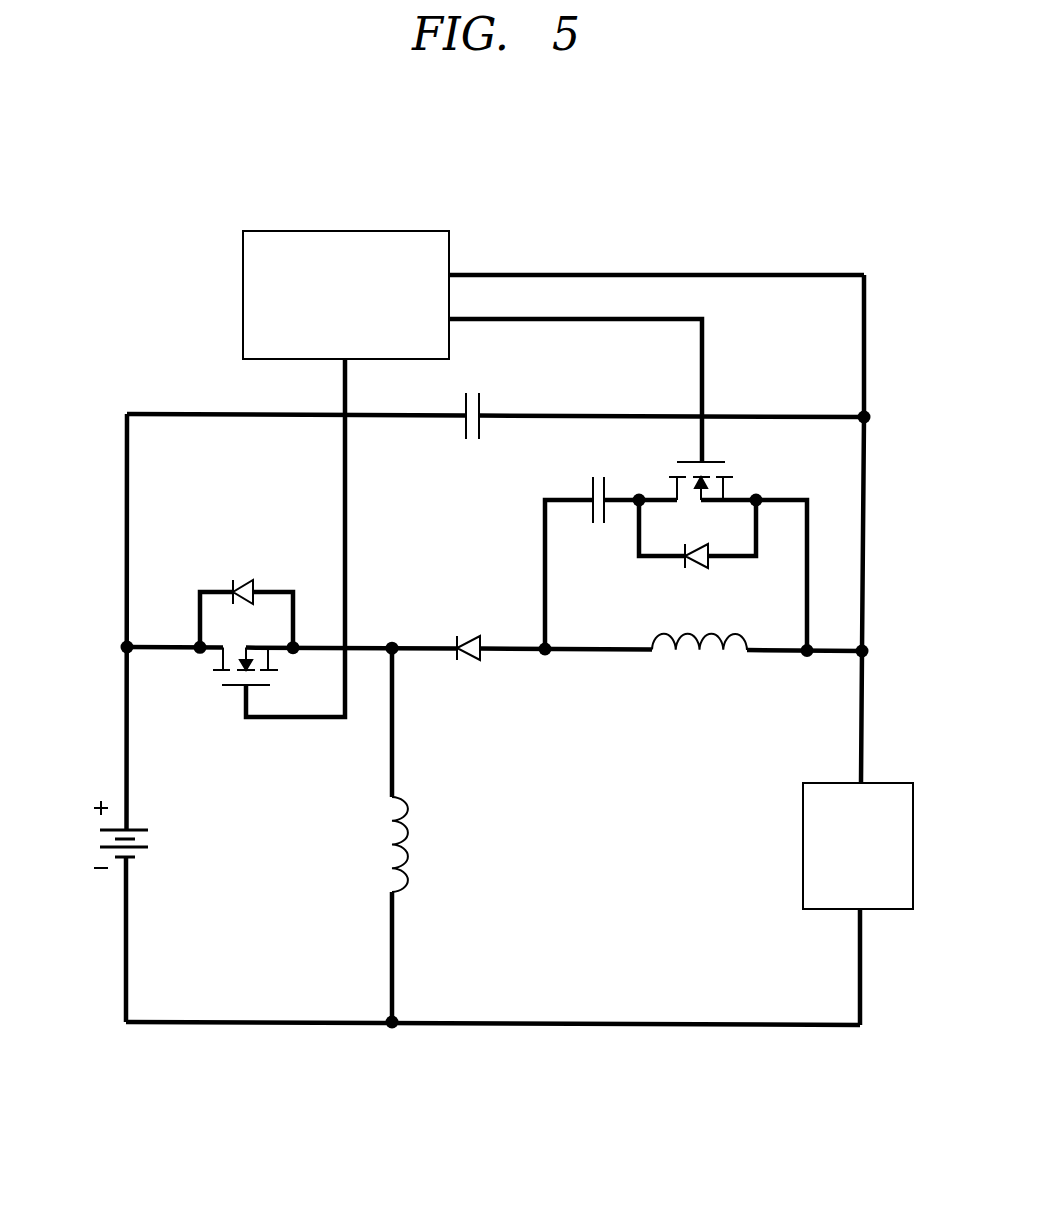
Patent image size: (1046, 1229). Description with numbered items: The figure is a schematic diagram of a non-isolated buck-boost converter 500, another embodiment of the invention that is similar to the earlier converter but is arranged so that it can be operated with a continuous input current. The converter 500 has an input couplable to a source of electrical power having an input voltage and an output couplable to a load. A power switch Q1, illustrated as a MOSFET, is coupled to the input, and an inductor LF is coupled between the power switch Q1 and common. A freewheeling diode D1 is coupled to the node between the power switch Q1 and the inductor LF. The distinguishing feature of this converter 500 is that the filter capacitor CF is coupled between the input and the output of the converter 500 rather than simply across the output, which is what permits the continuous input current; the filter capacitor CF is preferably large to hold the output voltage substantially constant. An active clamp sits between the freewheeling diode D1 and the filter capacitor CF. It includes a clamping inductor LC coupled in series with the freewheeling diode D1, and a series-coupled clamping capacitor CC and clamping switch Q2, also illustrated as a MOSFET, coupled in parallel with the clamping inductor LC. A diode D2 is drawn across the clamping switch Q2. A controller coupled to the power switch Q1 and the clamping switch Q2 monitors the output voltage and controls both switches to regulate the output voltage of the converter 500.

The non-isolated buck-boost converter 500 is at (718, 191).
The power switch Q1 is at (246, 608).
The clamping switch Q2 is at (718, 472).
The freewheeling diode D1 is at (468, 677).
The body diode of auxiliary switch D2 is at (697, 560).
The filter capacitor CF is at (471, 440).
The clamping capacitor CC is at (599, 526).
The clamping inductor LC is at (699, 670).
The inductor LF is at (381, 844).